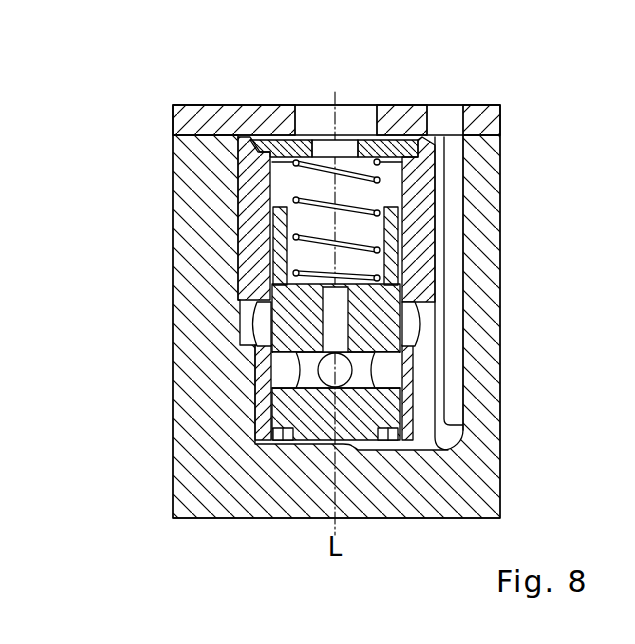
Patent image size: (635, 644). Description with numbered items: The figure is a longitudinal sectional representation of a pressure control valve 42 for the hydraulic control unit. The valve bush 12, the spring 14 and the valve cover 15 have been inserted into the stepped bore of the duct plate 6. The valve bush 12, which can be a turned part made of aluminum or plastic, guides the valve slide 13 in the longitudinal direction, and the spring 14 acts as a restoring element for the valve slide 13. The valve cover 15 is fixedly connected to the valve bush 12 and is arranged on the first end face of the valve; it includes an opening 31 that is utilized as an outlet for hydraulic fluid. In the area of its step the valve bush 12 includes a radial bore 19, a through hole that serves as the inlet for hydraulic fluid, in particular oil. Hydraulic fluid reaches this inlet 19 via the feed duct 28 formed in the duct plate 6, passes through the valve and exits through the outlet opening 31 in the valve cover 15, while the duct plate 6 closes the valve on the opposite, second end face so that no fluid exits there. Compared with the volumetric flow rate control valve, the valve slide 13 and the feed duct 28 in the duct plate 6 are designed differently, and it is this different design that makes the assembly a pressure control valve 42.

The duct plate 6 is at (208, 209).
The valve bush 12 is at (268, 238).
The valve slide 13 is at (300, 317).
The spring 14 is at (262, 168).
The valve cover 15 is at (396, 147).
The radial bore 19 is at (407, 319).
The feed duct 28 is at (452, 258).
The opening 31 is at (325, 148).
The pressure control valve 42 is at (158, 383).